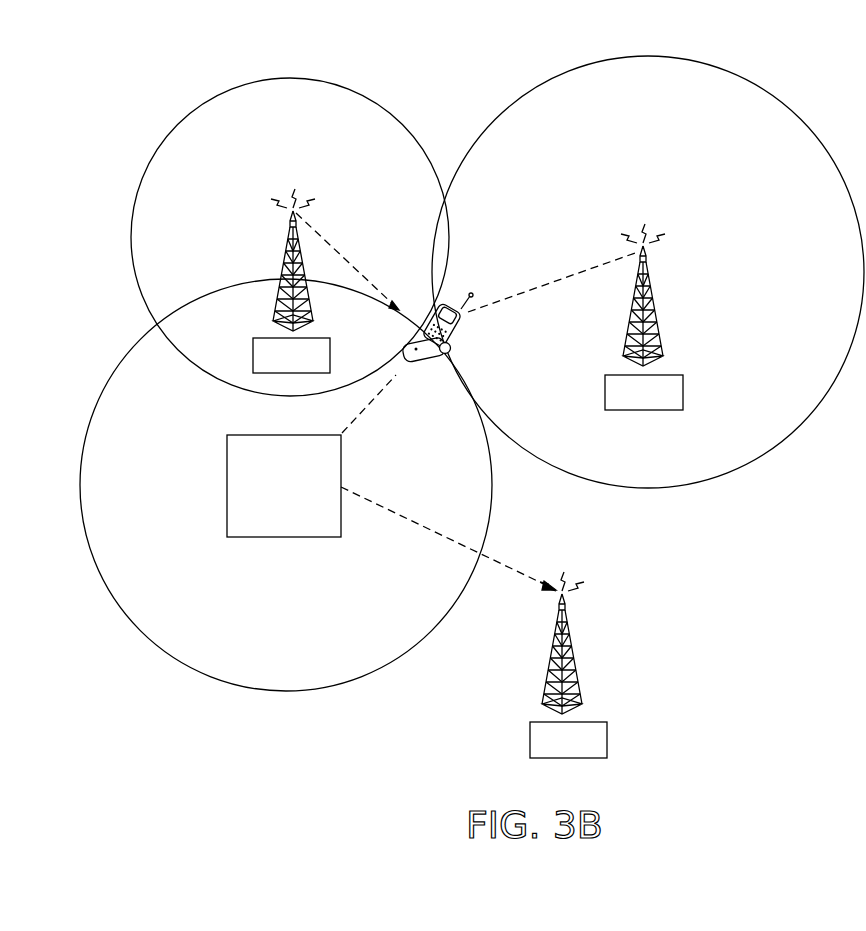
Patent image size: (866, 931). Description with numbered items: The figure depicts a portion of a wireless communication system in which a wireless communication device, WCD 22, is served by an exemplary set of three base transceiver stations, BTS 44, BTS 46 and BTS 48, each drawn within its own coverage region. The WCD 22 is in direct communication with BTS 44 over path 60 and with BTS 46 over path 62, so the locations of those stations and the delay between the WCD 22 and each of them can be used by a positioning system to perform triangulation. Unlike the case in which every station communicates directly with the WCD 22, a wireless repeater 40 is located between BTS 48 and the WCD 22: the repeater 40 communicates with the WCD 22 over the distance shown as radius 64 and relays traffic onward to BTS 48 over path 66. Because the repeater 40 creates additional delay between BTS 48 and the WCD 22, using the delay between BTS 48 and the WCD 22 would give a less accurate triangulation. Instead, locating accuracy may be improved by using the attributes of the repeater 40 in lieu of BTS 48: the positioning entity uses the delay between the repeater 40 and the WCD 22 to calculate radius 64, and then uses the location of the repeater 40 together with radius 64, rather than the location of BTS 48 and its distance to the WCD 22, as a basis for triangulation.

The WCD 22 is at (436, 364).
The wireless repeater 40 is at (341, 516).
The BTS 44 is at (298, 238).
The BTS 46 is at (650, 275).
The BTS 48 is at (568, 598).
The communication path 60 is at (341, 252).
The communication path 62 is at (514, 290).
The radius 64 is at (363, 401).
The communication path 66 is at (513, 566).